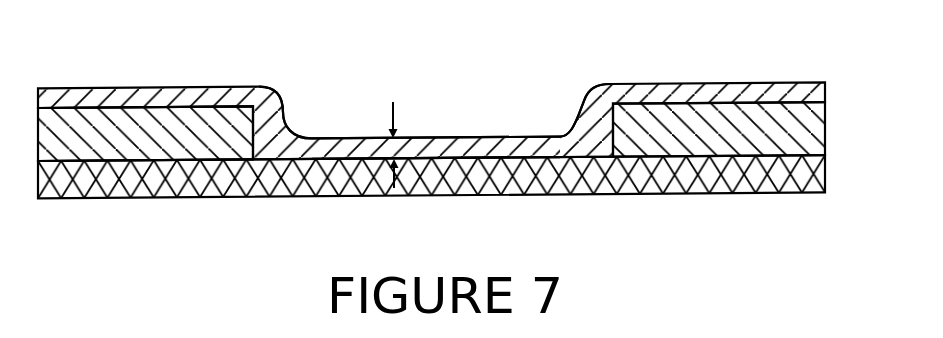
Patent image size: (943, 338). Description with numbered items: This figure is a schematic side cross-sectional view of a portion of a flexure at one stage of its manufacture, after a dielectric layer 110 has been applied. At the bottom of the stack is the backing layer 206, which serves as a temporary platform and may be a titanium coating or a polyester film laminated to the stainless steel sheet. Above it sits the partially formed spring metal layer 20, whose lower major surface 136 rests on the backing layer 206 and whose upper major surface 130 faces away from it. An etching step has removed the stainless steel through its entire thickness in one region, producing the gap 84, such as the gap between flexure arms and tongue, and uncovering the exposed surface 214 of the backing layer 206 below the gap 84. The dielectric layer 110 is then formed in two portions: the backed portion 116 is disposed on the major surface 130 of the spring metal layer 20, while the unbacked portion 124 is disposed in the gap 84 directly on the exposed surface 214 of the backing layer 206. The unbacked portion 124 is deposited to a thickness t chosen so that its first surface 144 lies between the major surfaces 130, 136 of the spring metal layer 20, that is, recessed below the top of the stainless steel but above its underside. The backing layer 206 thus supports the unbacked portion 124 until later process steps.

The spring metal layer 20 is at (464, 146).
The gap 84 is at (500, 108).
The dielectric layer 110 is at (177, 83).
The backed portion 116 is at (239, 88).
The unbacked portion 124 is at (438, 137).
The major surface 130 is at (83, 108).
The major surface 136 is at (233, 162).
The first surface 144 is at (524, 137).
The backing layer 206 is at (82, 198).
The exposed surface 214 is at (325, 158).
The thickness t is at (392, 160).